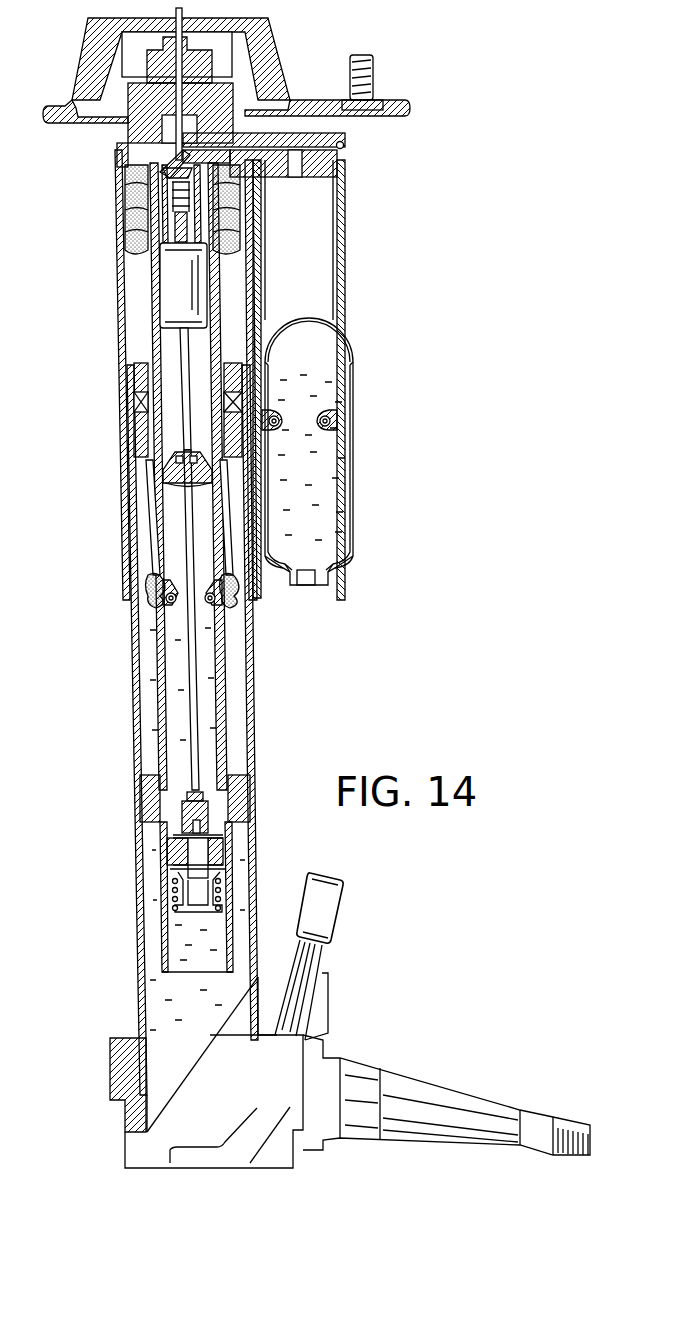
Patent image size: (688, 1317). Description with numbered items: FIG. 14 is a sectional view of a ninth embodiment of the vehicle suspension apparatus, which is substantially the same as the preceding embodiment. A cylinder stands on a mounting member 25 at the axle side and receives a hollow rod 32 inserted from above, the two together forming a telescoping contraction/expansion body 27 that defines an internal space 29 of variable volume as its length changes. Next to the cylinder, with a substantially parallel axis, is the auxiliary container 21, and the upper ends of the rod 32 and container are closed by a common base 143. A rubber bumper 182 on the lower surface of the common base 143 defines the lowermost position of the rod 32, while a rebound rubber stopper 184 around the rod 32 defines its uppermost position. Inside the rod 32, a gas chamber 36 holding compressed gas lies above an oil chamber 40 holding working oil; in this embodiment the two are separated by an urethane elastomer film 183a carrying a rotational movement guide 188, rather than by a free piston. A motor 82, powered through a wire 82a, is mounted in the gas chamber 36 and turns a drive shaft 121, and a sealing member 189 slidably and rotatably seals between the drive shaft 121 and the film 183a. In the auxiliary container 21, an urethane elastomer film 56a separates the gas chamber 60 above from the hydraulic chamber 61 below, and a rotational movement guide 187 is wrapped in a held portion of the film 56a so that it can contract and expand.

The wire 82a is at (175, 13).
The common base 143 is at (117, 148).
The rubber bumper 182 is at (122, 237).
The motor 82 is at (168, 297).
The gas chamber 36 is at (172, 352).
The drive shaft 121 is at (183, 372).
The internal space 29 is at (170, 408).
The sealing member 189 is at (178, 460).
The urethane elastomer film 183a is at (163, 537).
The rebound rubber stopper 184 is at (147, 598).
The rotational movement guide 188 is at (153, 618).
The oil chamber 40 is at (173, 697).
The gas chamber 60 is at (323, 262).
The auxiliary container 21 is at (348, 305).
The urethane elastomer film 56a is at (323, 333).
The rotational movement guide 187 is at (345, 424).
The hydraulic chamber 61 is at (333, 507).
The contraction/expansion body 27 is at (257, 631).
The hollow rod 32 is at (228, 680).
The mounting member 25 is at (440, 1103).